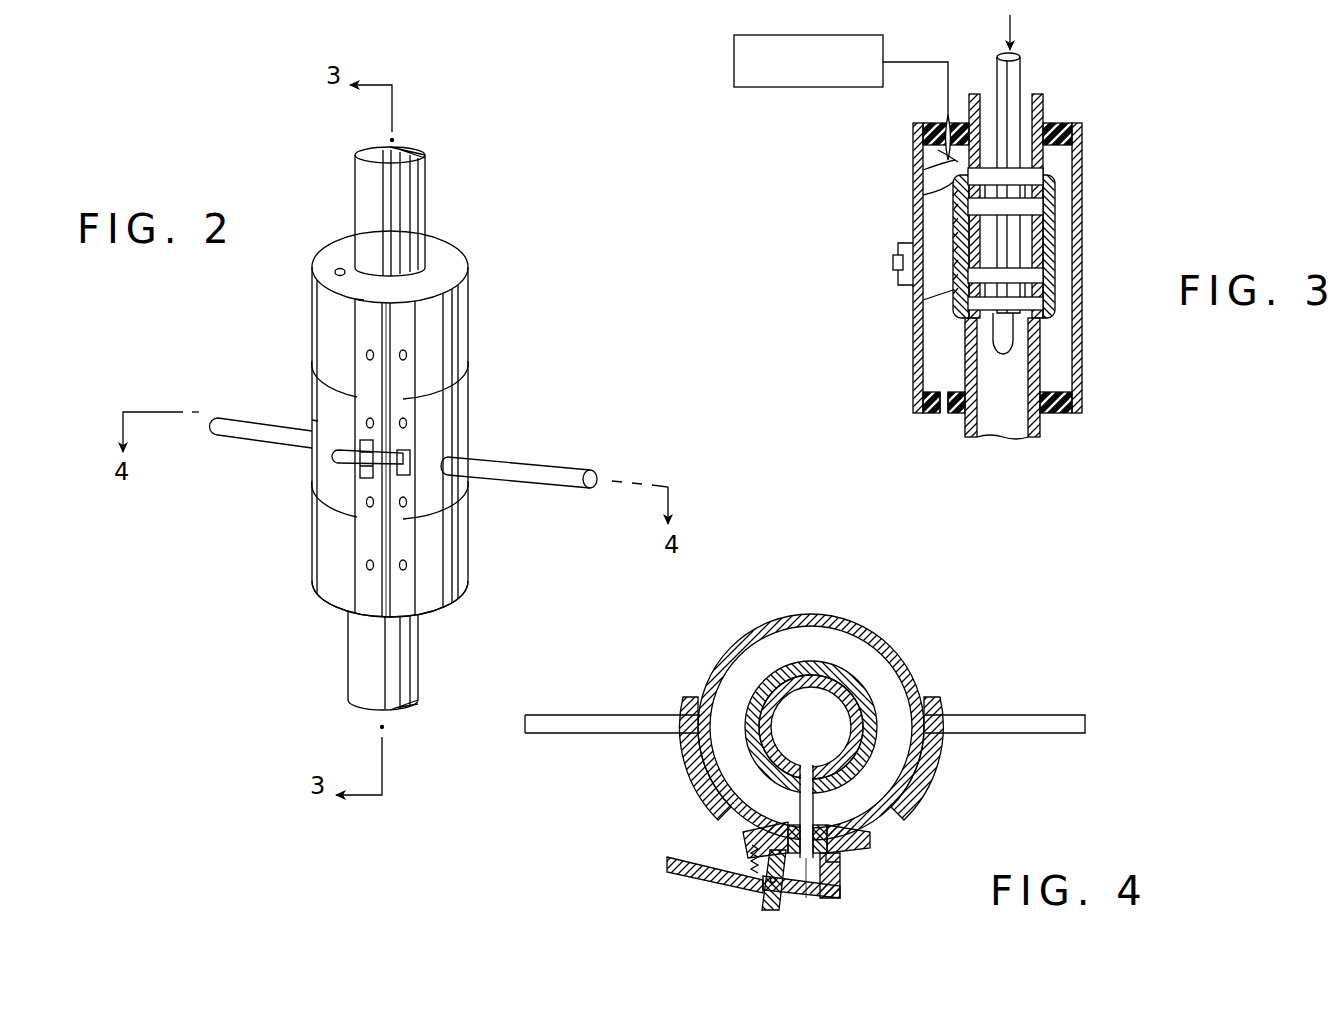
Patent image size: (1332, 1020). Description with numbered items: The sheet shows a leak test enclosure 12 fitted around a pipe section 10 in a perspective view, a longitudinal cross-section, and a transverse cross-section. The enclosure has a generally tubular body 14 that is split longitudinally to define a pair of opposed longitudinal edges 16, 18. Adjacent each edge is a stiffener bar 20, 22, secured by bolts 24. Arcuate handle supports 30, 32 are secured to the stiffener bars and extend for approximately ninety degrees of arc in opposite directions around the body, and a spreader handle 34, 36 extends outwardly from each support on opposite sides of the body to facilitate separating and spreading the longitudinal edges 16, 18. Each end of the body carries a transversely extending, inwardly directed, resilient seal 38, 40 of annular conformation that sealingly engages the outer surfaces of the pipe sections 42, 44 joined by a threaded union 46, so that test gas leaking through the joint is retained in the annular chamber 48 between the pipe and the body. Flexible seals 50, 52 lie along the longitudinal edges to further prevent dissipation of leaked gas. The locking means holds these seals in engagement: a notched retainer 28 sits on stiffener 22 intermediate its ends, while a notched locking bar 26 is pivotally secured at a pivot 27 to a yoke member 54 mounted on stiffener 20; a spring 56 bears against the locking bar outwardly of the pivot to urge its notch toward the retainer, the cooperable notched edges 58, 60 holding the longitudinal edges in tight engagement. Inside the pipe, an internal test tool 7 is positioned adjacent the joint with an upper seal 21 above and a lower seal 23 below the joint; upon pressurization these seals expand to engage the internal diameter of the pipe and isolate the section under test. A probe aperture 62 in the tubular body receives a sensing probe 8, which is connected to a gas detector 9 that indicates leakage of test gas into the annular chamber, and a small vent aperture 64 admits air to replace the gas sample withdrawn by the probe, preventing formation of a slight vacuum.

In FIG. 3, the internal test tool 7 is at (1012, 233).
In FIG. 3, the detection probe 8 is at (938, 157).
In FIG. 3, the gas detector 9 is at (821, 88).
In FIG. 2, the pipe section 10 is at (482, 203).
In FIG. 3, the pipe section 10 is at (1070, 80).
In FIG. 2, the leak test enclosure 12 is at (494, 297).
In FIG. 3, the leak test enclosure 12 is at (1102, 166).
In FIG. 4, the leak test enclosure 12 is at (903, 624).
In FIG. 2, the tubular body 14 is at (470, 354).
In FIG. 3, the tubular body 14 is at (1082, 252).
In FIG. 4, the tubular body 14 is at (906, 672).
In FIG. 2, the longitudinal edge 16 is at (380, 343).
In FIG. 4, the longitudinal edge 16 is at (790, 825).
In FIG. 2, the longitudinal edge 18 is at (420, 400).
In FIG. 4, the longitudinal edge 18 is at (826, 825).
In FIG. 2, the stiffener bar 20 is at (364, 312).
In FIG. 4, the stiffener bar 20 is at (770, 840).
In FIG. 3, the upper seal 21 is at (952, 200).
In FIG. 2, the stiffener bar 22 is at (413, 345).
In FIG. 4, the stiffener bar 22 is at (870, 840).
In FIG. 3, the lower seal 23 is at (962, 313).
In FIG. 2, the bolts 24 is at (366, 569).
In FIG. 2, the notched locking bar 26 is at (335, 456).
In FIG. 3, the notched locking bar 26 is at (893, 262).
In FIG. 4, the notched locking bar 26 is at (680, 872).
In FIG. 4, the pivot 27 is at (770, 890).
In FIG. 2, the notched retainer 28 is at (410, 450).
In FIG. 3, the notched retainer 28 is at (906, 290).
In FIG. 4, the notched retainer 28 is at (842, 862).
In FIG. 2, the arcuate handle support 30 is at (321, 422).
In FIG. 4, the arcuate handle support 30 is at (693, 766).
In FIG. 2, the arcuate handle support 32 is at (463, 492).
In FIG. 4, the arcuate handle support 32 is at (936, 756).
In FIG. 2, the spreader handle 34 is at (248, 441).
In FIG. 4, the spreader handle 34 is at (575, 735).
In FIG. 2, the spreader handle 36 is at (554, 480).
In FIG. 4, the spreader handle 36 is at (1045, 714).
In FIG. 2, the resilient seal 38 is at (446, 250).
In FIG. 3, the resilient seal 38 is at (1062, 128).
In FIG. 3, the resilient seal 40 is at (1058, 413).
In FIG. 2, the pipe section 42 is at (370, 195).
In FIG. 3, the pipe section 42 is at (1044, 106).
In FIG. 2, the pipe section 44 is at (416, 665).
In FIG. 3, the pipe section 44 is at (966, 430).
In FIG. 4, the pipe section 44 is at (779, 686).
In FIG. 3, the union 46 is at (1056, 278).
In FIG. 4, the union 46 is at (829, 665).
In FIG. 3, the annular chamber 48 is at (931, 181).
In FIG. 4, the annular chamber 48 is at (729, 690).
In FIG. 2, the flexible seal 50 is at (382, 330).
In FIG. 4, the flexible seal 50 is at (800, 795).
In FIG. 2, the flexible seal 52 is at (393, 548).
In FIG. 4, the flexible seal 52 is at (818, 800).
In FIG. 2, the yoke member 54 is at (363, 441).
In FIG. 4, the yoke member 54 is at (770, 906).
In FIG. 4, the spring 56 is at (750, 856).
In FIG. 4, the notched edge 58 is at (842, 880).
In FIG. 4, the notched edge 60 is at (815, 896).
In FIG. 2, the probe aperture 62 is at (332, 271).
In FIG. 3, the probe aperture 62 is at (946, 121).
In FIG. 3, the vent aperture 64 is at (940, 412).